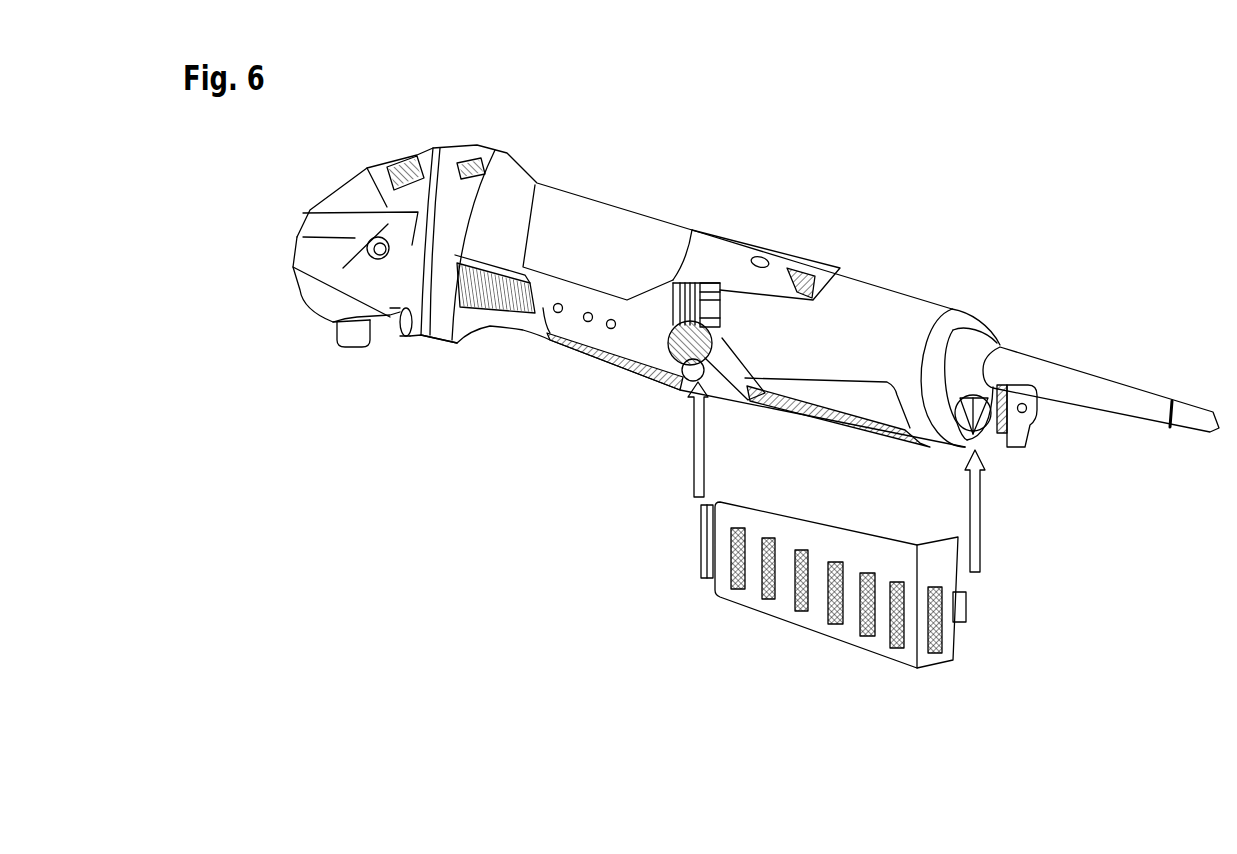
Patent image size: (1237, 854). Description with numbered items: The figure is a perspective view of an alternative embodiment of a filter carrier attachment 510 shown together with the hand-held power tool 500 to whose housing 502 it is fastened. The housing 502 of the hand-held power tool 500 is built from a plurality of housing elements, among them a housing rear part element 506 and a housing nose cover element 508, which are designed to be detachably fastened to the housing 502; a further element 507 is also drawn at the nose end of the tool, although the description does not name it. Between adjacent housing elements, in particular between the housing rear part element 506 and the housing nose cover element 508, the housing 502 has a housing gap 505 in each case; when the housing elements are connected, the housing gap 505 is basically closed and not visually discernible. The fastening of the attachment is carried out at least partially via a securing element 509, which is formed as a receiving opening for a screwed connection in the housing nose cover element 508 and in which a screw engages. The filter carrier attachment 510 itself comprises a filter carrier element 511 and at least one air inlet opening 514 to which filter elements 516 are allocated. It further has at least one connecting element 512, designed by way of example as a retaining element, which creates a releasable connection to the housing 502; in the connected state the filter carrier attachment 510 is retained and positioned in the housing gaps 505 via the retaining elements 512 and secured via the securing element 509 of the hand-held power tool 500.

The hand-held power tool 500 is at (1058, 188).
The housing 502 is at (609, 179).
The housing gap 505 is at (683, 388).
The housing rear part element 506 is at (908, 278).
The insert tool / blade 507 is at (1050, 347).
The housing nose cover element 508 is at (1023, 428).
The securing element 509 is at (1046, 410).
The filter carrier attachment 510 is at (771, 671).
The filter carrier element 511 is at (902, 655).
The connecting element 512 is at (708, 538).
The air inlet opening 514 is at (940, 638).
The filter elements 516 is at (828, 630).